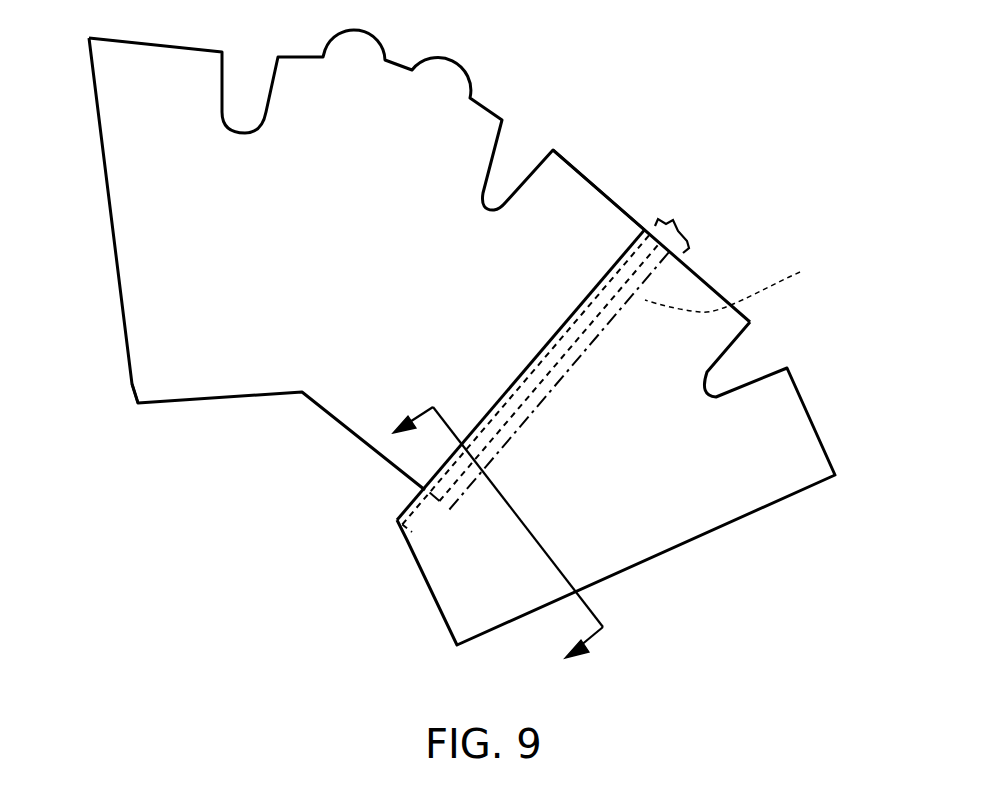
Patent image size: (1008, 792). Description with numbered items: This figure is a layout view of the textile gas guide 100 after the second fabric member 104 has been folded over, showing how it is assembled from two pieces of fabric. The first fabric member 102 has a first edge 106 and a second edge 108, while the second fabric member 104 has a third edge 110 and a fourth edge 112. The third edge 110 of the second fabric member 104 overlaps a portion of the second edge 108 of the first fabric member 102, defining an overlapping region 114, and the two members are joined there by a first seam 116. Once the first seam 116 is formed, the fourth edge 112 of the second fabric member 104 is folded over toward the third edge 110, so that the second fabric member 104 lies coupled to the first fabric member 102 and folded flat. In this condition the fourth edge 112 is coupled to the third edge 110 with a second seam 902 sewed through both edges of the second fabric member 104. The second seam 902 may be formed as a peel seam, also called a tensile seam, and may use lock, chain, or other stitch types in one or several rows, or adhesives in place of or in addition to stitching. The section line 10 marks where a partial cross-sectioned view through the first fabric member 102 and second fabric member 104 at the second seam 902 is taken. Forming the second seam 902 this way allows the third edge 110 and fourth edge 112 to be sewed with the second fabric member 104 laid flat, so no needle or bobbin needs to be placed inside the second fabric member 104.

The textile gas guide 100 is at (733, 122).
The first fabric member 102 is at (377, 248).
The second fabric member 104 is at (634, 470).
The first edge 106 is at (133, 382).
The second edge 108 is at (748, 285).
The third edge 110 is at (637, 250).
The fourth edge 112 is at (559, 381).
The overlapping region 114 is at (673, 227).
The first seam 116 is at (638, 283).
The second seam 902 is at (408, 505).
The section line 10- 10 is at (525, 514).